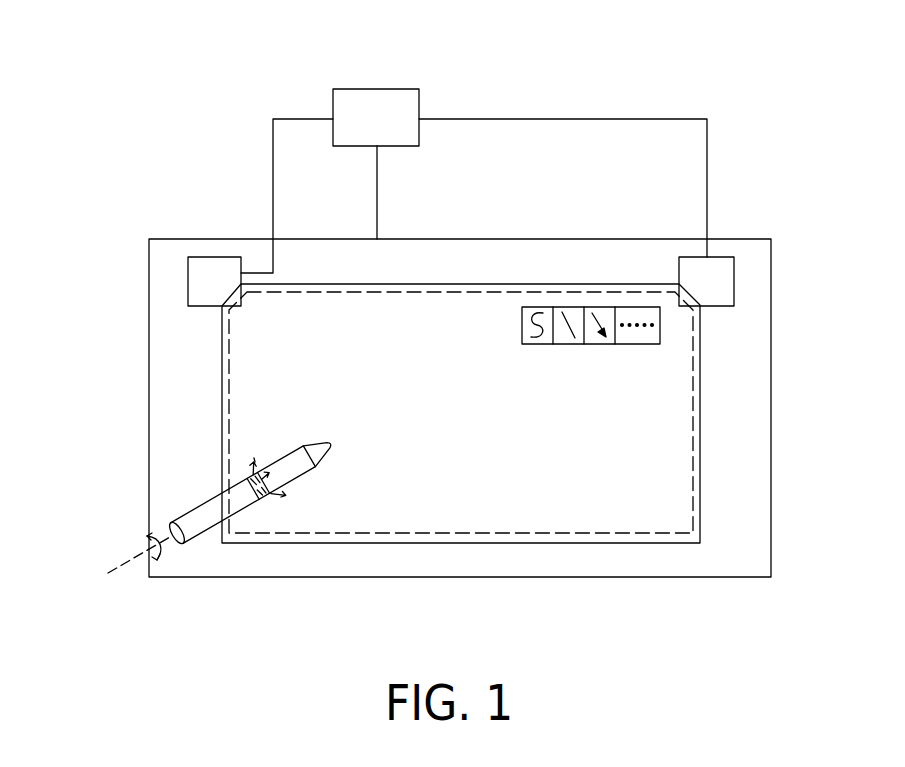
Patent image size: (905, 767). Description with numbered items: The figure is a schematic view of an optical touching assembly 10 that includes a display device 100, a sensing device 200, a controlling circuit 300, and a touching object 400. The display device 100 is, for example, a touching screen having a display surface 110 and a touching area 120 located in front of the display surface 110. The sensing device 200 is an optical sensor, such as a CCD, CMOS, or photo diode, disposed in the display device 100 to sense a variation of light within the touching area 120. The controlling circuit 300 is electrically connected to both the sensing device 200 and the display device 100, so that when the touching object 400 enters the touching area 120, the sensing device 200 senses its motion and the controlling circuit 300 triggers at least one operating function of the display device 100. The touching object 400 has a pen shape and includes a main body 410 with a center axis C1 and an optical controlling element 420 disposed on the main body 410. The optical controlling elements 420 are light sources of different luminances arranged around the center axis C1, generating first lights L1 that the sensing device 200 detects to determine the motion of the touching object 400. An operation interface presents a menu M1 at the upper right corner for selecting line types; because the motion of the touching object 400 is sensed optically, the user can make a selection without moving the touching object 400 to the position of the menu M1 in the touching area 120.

The optical touching assembly 10 is at (441, 299).
The display device 100 is at (149, 318).
The display surface 110 is at (700, 422).
The touching area 120 is at (693, 480).
The sensing device 200 is at (188, 273).
The controlling circuit 300 is at (474, 181).
The touching object 400 is at (181, 474).
The main body 410 is at (193, 508).
The optical controlling element 420 is at (247, 478).
The menu M1 is at (640, 344).
The first lights L1 is at (254, 458).
The center axis C1 is at (122, 565).